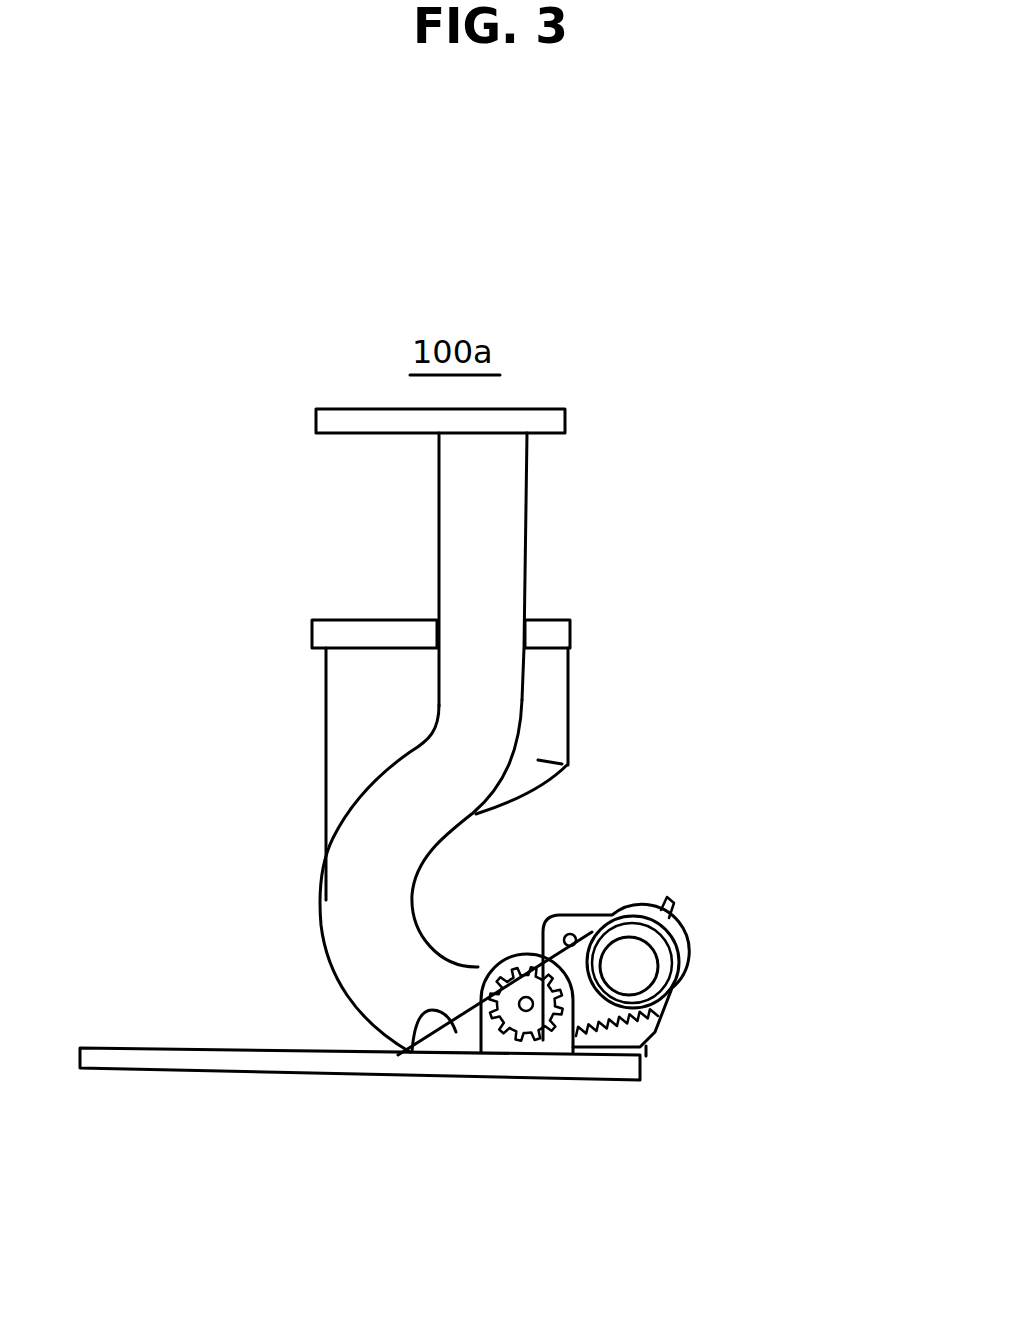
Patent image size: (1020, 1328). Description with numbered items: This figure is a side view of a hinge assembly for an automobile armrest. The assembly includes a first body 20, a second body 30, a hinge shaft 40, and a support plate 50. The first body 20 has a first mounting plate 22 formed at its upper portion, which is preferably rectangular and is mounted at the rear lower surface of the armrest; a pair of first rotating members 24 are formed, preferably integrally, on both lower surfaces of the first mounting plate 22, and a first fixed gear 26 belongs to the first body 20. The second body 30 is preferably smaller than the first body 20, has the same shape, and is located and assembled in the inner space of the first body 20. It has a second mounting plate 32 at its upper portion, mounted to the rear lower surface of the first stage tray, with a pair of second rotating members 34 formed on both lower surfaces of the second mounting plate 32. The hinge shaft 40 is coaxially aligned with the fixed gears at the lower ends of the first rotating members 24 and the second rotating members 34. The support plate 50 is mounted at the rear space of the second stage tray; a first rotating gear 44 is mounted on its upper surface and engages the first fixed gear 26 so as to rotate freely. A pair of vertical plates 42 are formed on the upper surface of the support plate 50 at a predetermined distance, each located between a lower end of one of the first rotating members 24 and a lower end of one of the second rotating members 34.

The first body 20 is at (568, 406).
The first mounting plate 22 is at (316, 408).
The first rotating members 24 is at (355, 925).
The first fixed gear 26 is at (645, 1040).
The second body 30 is at (570, 697).
The second mounting plate 32 is at (316, 620).
The second rotating members 34 is at (567, 765).
The hinge shaft 40 is at (632, 962).
The vertical plates 42 is at (413, 1052).
The first rotating gear 44 is at (521, 1048).
The support plate 50 is at (172, 1060).